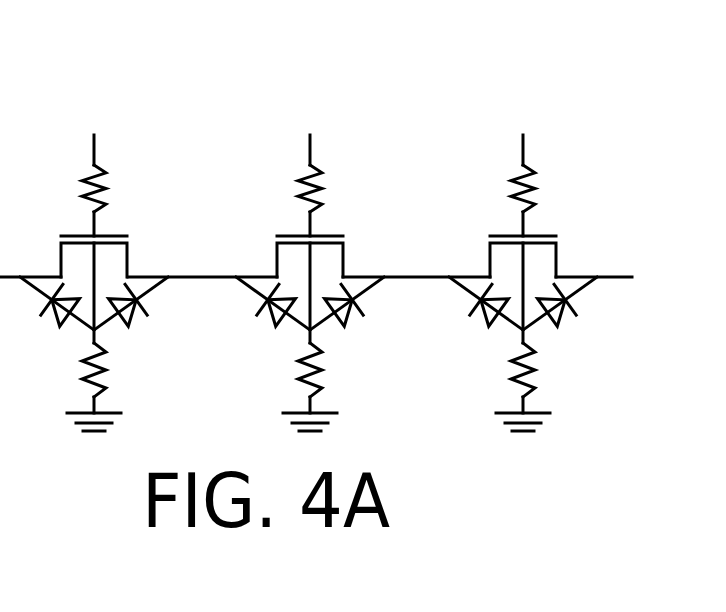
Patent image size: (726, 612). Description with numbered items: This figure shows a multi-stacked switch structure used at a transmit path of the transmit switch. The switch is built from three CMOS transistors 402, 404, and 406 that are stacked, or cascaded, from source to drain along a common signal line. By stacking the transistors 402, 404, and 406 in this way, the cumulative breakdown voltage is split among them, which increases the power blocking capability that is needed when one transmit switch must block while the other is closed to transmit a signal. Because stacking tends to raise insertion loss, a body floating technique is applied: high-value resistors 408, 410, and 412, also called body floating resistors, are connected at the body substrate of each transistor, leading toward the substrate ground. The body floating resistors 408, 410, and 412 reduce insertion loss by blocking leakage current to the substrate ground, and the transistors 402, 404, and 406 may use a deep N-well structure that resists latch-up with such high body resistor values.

The CMOS transistor 402 is at (113, 232).
The CMOS transistor 404 is at (330, 233).
The CMOS transistor 406 is at (543, 233).
The body floating resistor 408 is at (103, 345).
The body floating resistor 410 is at (325, 346).
The body floating resistor 412 is at (537, 346).